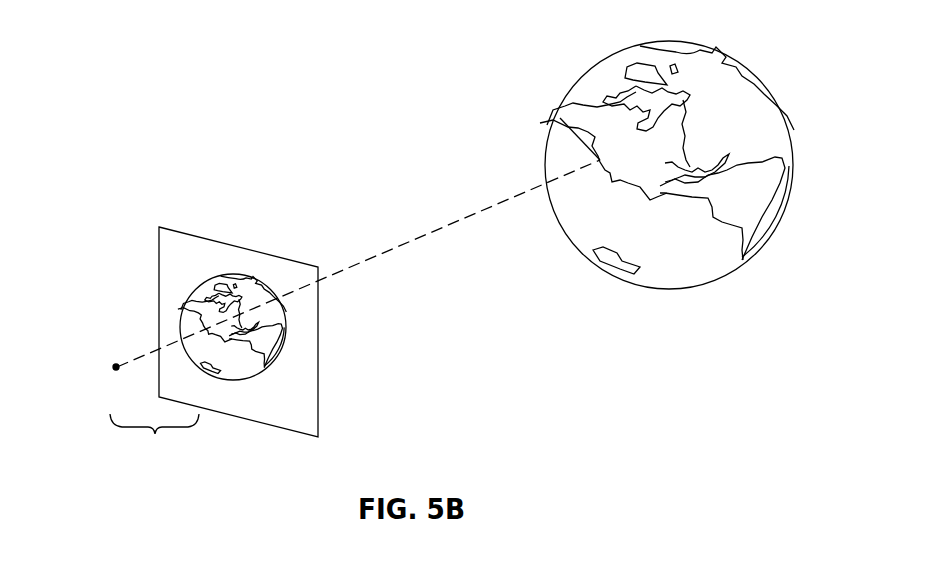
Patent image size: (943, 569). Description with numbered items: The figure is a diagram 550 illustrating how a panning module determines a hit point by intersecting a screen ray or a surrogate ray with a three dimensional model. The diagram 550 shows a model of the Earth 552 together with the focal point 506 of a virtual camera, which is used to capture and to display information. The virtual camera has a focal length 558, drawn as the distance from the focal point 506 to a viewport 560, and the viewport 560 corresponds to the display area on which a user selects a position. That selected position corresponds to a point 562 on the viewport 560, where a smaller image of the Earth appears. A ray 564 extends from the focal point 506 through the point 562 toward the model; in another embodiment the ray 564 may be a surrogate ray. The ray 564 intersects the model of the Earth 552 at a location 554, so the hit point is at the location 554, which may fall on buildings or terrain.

The diagram 550 is at (808, 40).
The model of the Earth 552 is at (607, 55).
The location 554 is at (560, 118).
The ray 564 is at (470, 213).
The viewport 560 is at (318, 340).
The point 562 is at (209, 282).
The focal point 506 is at (116, 367).
The focal length 558 is at (152, 450).